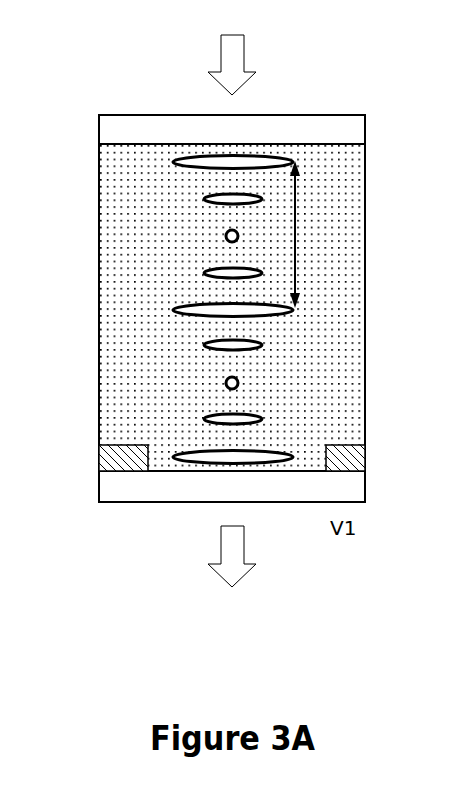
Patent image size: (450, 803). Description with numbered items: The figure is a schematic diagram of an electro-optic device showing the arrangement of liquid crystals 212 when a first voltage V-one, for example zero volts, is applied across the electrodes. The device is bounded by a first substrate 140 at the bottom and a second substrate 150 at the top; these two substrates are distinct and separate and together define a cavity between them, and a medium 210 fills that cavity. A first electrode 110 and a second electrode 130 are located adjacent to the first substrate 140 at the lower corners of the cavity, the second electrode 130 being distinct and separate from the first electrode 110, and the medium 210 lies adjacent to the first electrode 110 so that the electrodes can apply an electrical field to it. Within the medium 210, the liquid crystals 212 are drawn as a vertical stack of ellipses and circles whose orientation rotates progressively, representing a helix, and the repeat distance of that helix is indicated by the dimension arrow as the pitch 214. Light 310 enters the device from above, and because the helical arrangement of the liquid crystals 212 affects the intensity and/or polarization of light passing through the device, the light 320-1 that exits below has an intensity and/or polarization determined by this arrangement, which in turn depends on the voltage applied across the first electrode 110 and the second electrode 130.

The second substrate 150 is at (122, 132).
The first substrate 140 is at (125, 487).
The medium 210 is at (150, 175).
The liquid crystals 212 is at (203, 200).
The pitch 214 is at (297, 250).
The first electrode 110 is at (112, 460).
The second electrode 130 is at (340, 458).
The light 310 is at (238, 53).
The light 320-1 is at (233, 557).